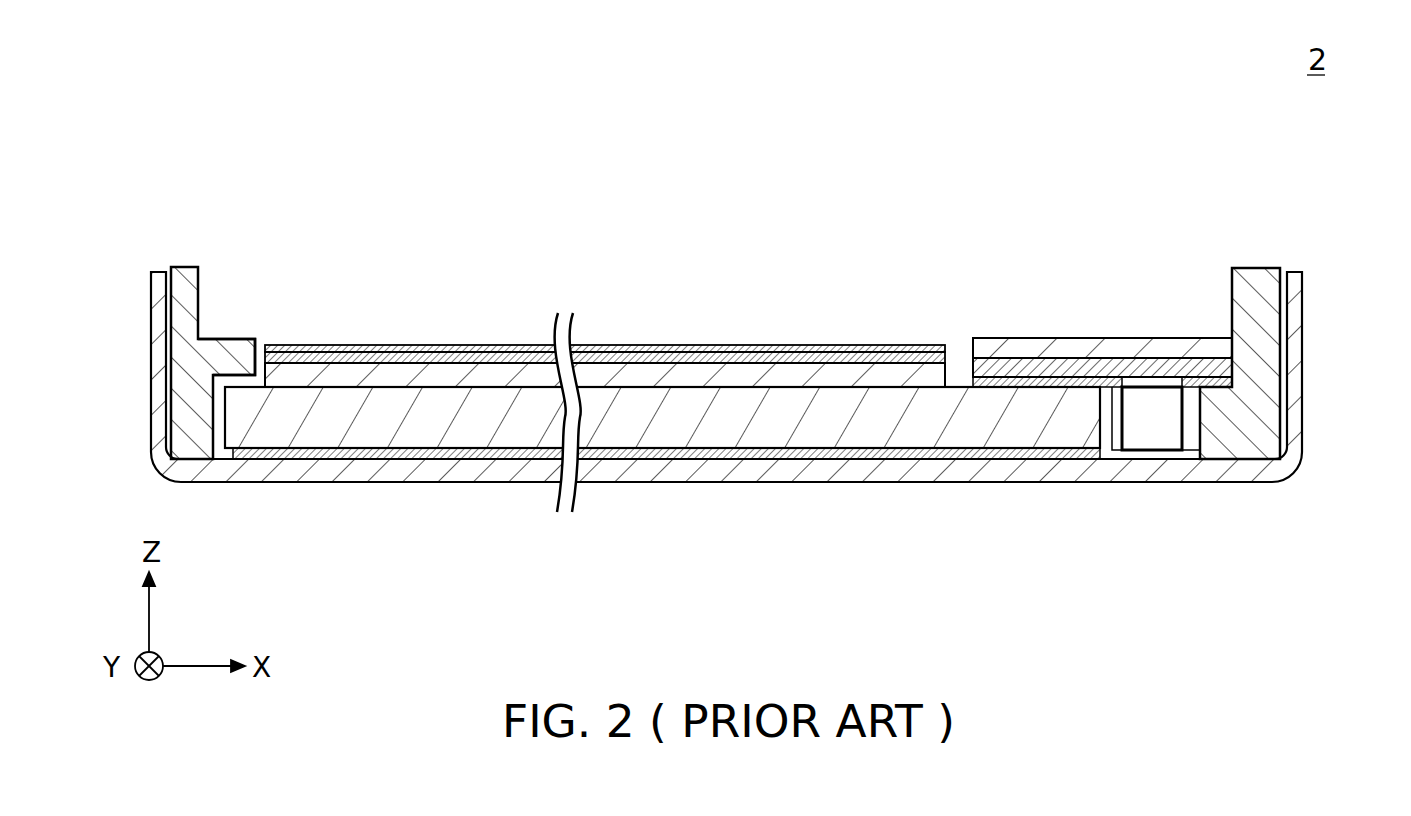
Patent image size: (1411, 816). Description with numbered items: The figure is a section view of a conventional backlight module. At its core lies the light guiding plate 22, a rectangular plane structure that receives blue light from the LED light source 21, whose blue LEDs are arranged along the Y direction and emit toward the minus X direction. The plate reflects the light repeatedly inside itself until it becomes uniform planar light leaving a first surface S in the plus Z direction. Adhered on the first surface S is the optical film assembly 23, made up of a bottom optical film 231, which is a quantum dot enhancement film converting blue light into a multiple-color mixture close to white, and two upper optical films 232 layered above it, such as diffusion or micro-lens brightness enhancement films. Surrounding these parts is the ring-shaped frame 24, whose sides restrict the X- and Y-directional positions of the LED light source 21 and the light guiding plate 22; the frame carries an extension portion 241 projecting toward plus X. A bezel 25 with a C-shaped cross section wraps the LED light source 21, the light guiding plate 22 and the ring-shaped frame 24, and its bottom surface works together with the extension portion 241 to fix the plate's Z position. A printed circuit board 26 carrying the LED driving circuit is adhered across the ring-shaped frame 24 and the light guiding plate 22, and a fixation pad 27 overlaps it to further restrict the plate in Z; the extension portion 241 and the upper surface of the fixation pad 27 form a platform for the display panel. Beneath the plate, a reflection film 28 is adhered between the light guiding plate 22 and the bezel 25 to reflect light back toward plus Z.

The LED light source 21 is at (1152, 432).
The light guiding plate 22 is at (675, 432).
The optical film assembly 23 is at (605, 295).
The bottom optical film 231 is at (598, 370).
The upper optical films 232 is at (567, 272).
The ring-shaped frame 24 is at (183, 280).
The extension portion 241 is at (234, 358).
The bezel 25 is at (1297, 350).
The printed circuit board 26 is at (1137, 367).
The fixation pad 27 is at (1023, 346).
The reflection film 28 is at (785, 456).
The first surface S is at (362, 385).